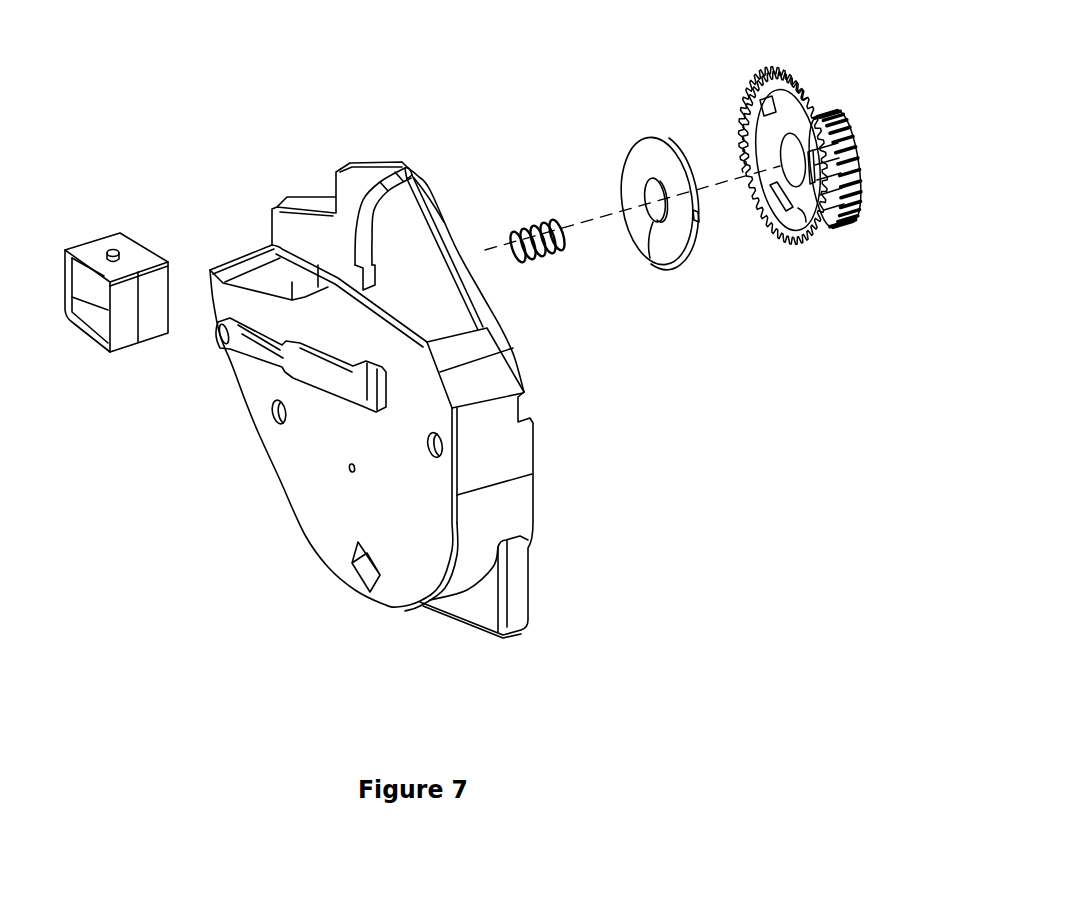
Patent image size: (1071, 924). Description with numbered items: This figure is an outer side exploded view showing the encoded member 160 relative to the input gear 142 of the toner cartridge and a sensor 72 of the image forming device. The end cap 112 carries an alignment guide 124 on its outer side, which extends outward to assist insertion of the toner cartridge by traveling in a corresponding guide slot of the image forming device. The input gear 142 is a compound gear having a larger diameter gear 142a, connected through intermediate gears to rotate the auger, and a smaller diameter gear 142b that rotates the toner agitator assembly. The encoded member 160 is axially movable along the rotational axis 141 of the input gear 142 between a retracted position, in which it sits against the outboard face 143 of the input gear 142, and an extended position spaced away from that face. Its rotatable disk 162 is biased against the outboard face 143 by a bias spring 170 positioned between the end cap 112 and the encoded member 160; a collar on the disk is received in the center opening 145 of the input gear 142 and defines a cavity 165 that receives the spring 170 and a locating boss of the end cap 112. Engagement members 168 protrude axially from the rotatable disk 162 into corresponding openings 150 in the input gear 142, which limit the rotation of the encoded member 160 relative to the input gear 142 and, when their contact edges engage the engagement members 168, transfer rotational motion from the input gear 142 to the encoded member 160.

The block 72 is at (90, 248).
The end cap 112 is at (320, 527).
The alignment guide 124 is at (272, 358).
The rotational axis 141 is at (590, 218).
The input gear 142 is at (805, 162).
The larger diameter gear 142a is at (817, 88).
The smaller diameter gear 142b is at (850, 117).
The outboard face 143 is at (802, 233).
The center opening 145 is at (777, 153).
The openings 150 is at (753, 90).
The encoded member 160 is at (646, 201).
The rotatable disk 162 is at (628, 158).
The cavity 165 is at (655, 247).
The engagement members 168 is at (698, 223).
The bias spring 170 is at (552, 255).